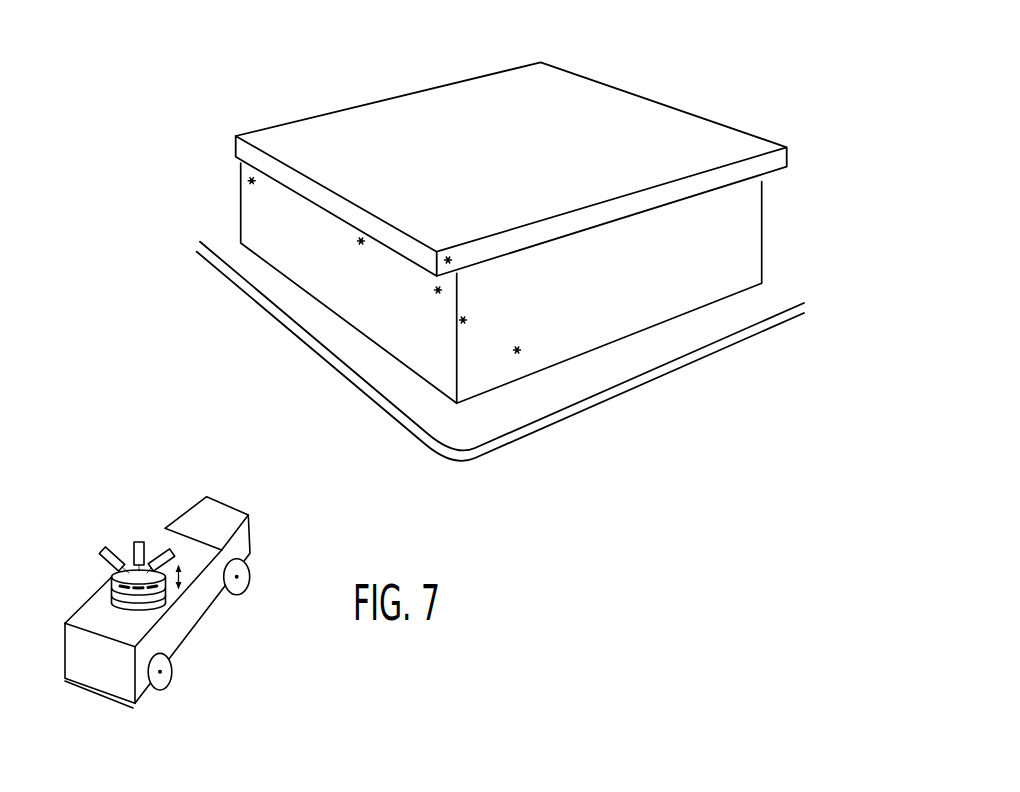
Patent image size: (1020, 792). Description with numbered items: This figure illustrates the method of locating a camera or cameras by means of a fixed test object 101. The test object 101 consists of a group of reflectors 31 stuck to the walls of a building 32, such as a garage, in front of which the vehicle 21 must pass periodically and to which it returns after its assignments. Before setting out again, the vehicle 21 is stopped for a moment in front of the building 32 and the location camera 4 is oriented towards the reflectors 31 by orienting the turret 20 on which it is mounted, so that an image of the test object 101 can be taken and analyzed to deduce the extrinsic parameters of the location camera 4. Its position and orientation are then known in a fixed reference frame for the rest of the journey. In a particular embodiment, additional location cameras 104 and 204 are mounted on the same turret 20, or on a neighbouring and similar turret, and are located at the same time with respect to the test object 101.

The test object 101 is at (216, 208).
The building 32 is at (668, 92).
The reflectors 31 is at (356, 241).
The vehicle 21 is at (88, 702).
The turret 20 is at (110, 585).
The location camera 4 is at (138, 540).
The location camera 104 is at (103, 550).
The location camera 204 is at (157, 548).